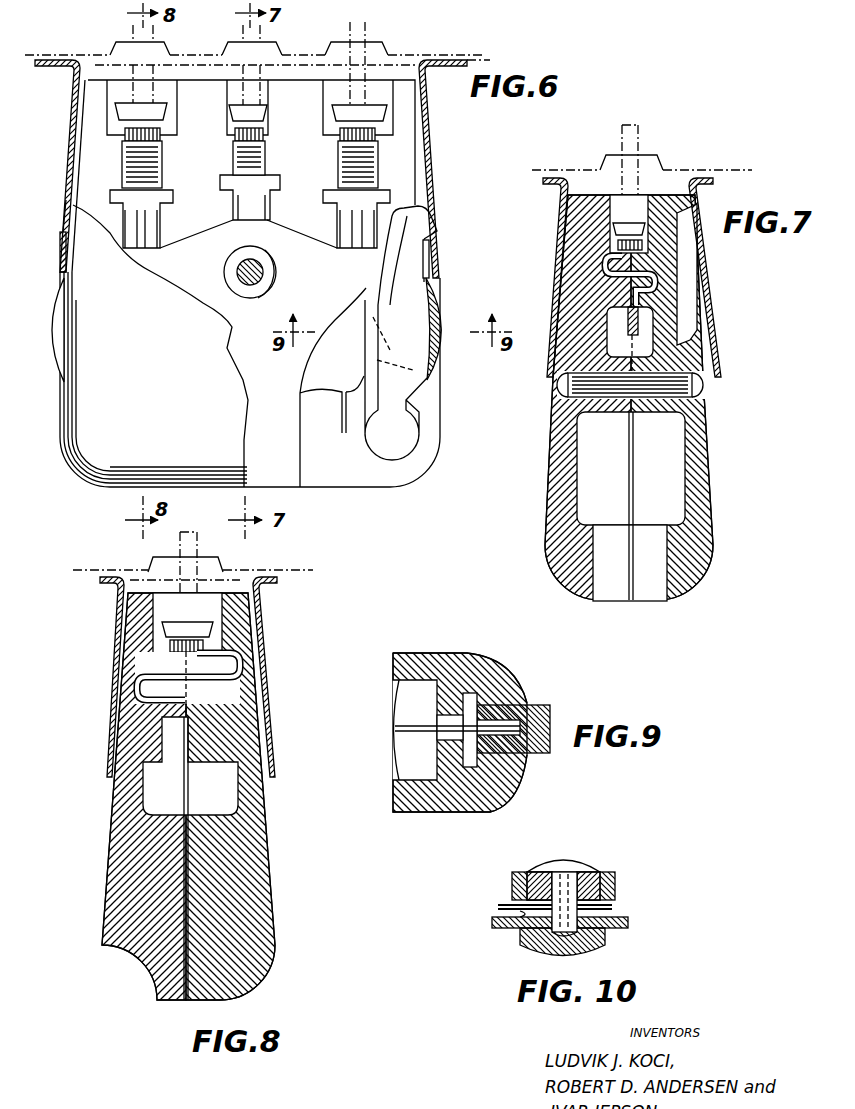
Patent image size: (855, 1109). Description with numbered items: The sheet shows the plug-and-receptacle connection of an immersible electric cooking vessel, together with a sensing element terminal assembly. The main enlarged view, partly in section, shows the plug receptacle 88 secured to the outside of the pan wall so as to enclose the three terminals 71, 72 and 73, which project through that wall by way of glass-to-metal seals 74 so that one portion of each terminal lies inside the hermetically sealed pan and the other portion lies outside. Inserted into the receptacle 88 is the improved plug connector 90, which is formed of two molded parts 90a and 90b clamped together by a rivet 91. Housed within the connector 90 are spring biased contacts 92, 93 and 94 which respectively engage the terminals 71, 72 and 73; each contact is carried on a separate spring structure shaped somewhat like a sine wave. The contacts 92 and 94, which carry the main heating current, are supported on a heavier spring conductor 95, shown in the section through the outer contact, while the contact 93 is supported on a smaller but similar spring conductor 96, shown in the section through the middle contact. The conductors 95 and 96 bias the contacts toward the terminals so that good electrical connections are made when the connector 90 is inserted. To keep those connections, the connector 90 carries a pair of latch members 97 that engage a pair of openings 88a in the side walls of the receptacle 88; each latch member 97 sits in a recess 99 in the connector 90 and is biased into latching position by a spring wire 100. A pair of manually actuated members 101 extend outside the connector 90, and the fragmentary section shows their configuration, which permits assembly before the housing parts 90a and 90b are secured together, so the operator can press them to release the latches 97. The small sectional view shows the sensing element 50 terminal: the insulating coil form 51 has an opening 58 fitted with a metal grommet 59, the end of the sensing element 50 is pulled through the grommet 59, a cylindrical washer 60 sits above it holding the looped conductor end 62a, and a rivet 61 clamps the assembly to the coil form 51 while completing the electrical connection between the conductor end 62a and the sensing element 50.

In FIG. 10, the sensing element 50 is at (506, 906).
In FIG. 10, the insulating coil form 51 is at (619, 907).
In FIG. 10, the openings 58 is at (506, 925).
In FIG. 10, the metal grommets 59 is at (619, 929).
In FIG. 10, the cylindrical washer 60 is at (616, 880).
In FIG. 10, the rivet 61 is at (567, 874).
In FIG. 10, the conductor end 62a is at (528, 870).
In FIG. 6, the terminal 71 is at (165, 112).
In FIG. 8, the terminal 71 is at (130, 620).
In FIG. 6, the terminal 72 is at (266, 118).
In FIG. 7, the terminal 72 is at (618, 232).
In FIG. 6, the terminal 73 is at (380, 116).
In FIG. 6, the glass-to-metal seals 74 is at (226, 46).
In FIG. 7, the glass-to-metal seals 74 is at (663, 165).
In FIG. 8, the glass-to-metal seals 74 is at (203, 543).
In FIG. 6, the plug receptacle 88 is at (430, 142).
In FIG. 7, the plug receptacle 88 is at (713, 257).
In FIG. 8, the plug receptacle 88 is at (270, 712).
In FIG. 6, the openings 88a is at (66, 212).
In FIG. 6, the plug connector 90 is at (108, 490).
In FIG. 7, the plug connector 90 is at (752, 547).
In FIG. 8, the plug connector 90 is at (272, 823).
In FIG. 9, the plug connector 90 is at (511, 671).
In FIG. 6, the molded part 90a is at (62, 424).
In FIG. 7, the molded part 90a is at (700, 452).
In FIG. 8, the molded part 90a is at (256, 888).
In FIG. 6, the molded part 90b is at (410, 185).
In FIG. 7, the molded part 90b is at (563, 468).
In FIG. 8, the molded part 90b is at (122, 870).
In FIG. 6, the rivet 91 is at (262, 266).
In FIG. 7, the rivet 91 is at (704, 390).
In FIG. 6, the spring biased contact 92 is at (125, 133).
In FIG. 8, the spring biased contact 92 is at (206, 648).
In FIG. 6, the spring biased contact 93 is at (262, 136).
In FIG. 7, the spring biased contact 93 is at (618, 248).
In FIG. 6, the spring biased contact 94 is at (340, 131).
In FIG. 6, the spring conductor 95 is at (134, 160).
In FIG. 8, the spring conductor 95 is at (238, 667).
In FIG. 6, the spring conductor 96 is at (240, 151).
In FIG. 7, the spring conductor 96 is at (657, 281).
In FIG. 6, the latch members 97 is at (63, 234).
In FIG. 9, the latch members 97 is at (522, 701).
In FIG. 6, the recesses 99 is at (368, 398).
In FIG. 6, the spring wire 100 is at (301, 394).
In FIG. 9, the spring wire 100 is at (407, 730).
In FIG. 6, the manually actuated members 101 is at (60, 294).
In FIG. 9, the manually actuated members 101 is at (544, 706).